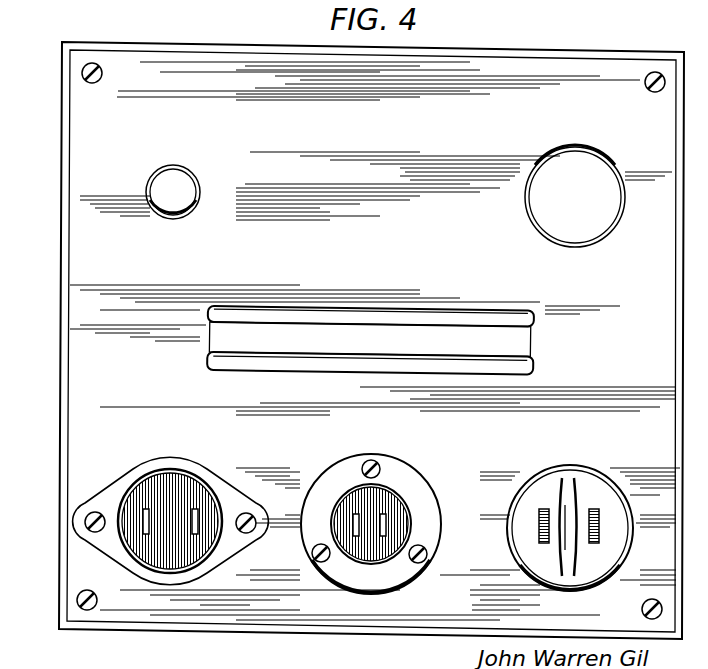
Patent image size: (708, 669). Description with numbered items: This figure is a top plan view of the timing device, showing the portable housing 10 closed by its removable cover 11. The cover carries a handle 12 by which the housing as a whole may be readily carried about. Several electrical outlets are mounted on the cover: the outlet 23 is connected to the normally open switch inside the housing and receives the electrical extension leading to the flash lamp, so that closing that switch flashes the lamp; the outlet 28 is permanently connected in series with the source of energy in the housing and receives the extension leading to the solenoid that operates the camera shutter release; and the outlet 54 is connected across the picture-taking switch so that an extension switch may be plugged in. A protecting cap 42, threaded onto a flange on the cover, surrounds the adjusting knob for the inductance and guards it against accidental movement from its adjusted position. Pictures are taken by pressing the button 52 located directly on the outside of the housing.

The portable housing 10 is at (62, 363).
The removable cover 11 is at (373, 341).
The handle 12 is at (381, 318).
The outlet 23 is at (324, 482).
The electrical outlet 28 is at (532, 490).
The protecting cap 42 is at (544, 167).
The button 52 is at (181, 172).
The outlet 54 is at (126, 487).